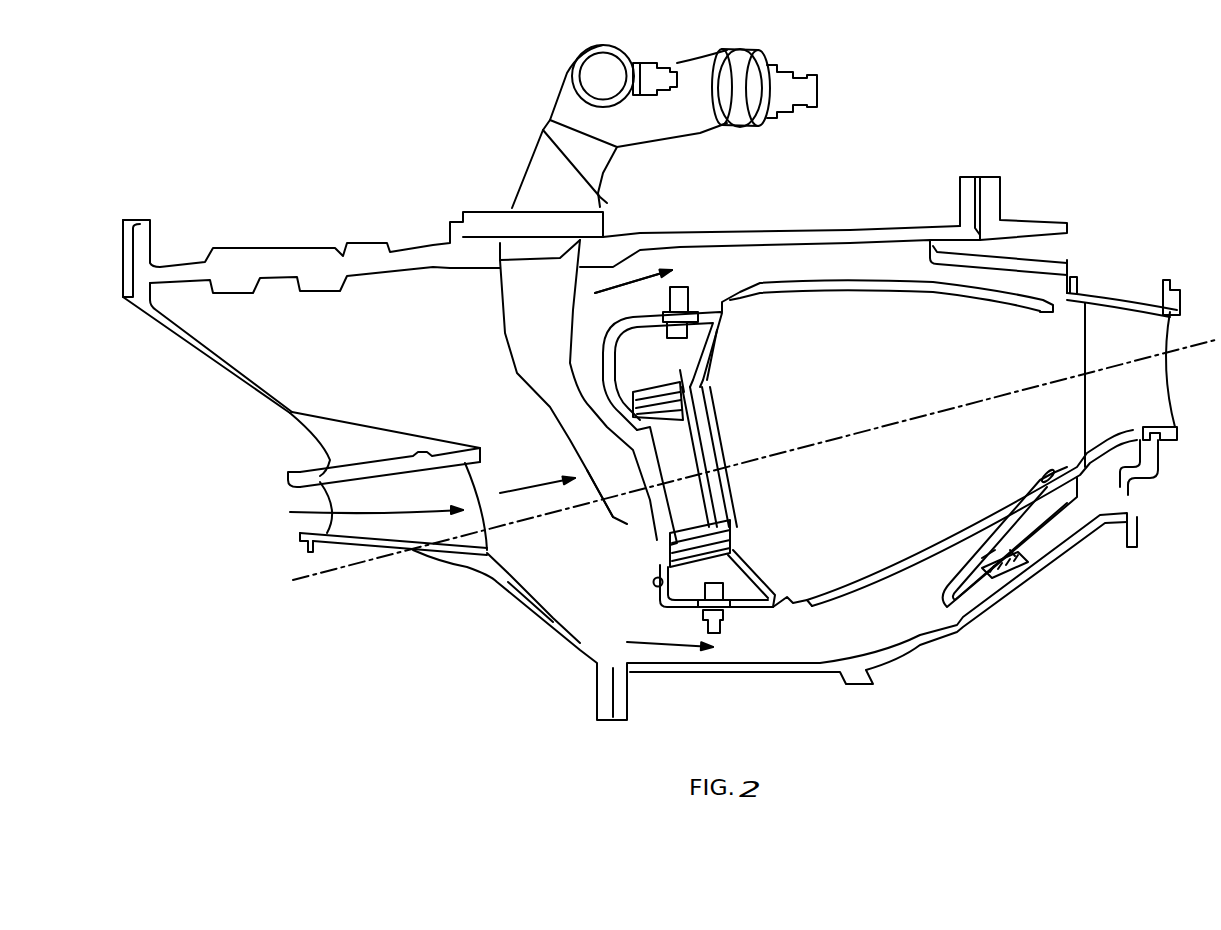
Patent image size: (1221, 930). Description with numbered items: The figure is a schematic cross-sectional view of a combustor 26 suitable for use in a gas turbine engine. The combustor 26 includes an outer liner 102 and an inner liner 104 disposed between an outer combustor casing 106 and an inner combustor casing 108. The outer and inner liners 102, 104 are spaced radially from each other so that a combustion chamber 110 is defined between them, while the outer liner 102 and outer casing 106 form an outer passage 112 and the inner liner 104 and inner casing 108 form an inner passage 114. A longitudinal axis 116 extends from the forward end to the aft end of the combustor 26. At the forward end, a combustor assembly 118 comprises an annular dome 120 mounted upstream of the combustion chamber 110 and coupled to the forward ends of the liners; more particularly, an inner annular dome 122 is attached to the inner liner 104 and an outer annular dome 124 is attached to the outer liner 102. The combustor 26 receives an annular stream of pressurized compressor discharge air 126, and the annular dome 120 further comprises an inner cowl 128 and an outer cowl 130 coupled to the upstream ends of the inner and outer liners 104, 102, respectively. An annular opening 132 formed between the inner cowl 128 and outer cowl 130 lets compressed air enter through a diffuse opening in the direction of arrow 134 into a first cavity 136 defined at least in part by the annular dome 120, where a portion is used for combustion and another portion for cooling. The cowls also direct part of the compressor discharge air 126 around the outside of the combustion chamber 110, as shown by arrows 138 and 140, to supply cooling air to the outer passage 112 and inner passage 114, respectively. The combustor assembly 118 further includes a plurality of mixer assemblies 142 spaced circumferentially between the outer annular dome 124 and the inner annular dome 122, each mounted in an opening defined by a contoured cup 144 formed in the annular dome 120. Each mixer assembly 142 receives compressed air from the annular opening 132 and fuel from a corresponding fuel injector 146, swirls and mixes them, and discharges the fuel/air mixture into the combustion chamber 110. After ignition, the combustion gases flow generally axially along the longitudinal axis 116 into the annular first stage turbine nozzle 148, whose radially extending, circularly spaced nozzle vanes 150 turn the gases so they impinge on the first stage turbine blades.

The combustor 26 is at (357, 158).
The outer liner 102 is at (975, 290).
The inner liner 104 is at (1008, 525).
The outer combustor casing 106 is at (950, 228).
The inner combustor casing 108 is at (987, 590).
The combustion chamber 110 is at (904, 380).
The outer passage 112 is at (806, 272).
The inner passage 114 is at (894, 603).
The longitudinal axis 116 is at (400, 555).
The combustor assembly 118 is at (712, 393).
The annular dome 120 is at (727, 360).
The inner annular dome 122 is at (788, 595).
The outer annular dome 124 is at (722, 322).
The compressor discharge air 126 is at (305, 512).
The inner cowl 128 is at (653, 583).
The outer cowl 130 is at (605, 388).
The annular opening 132 is at (612, 528).
The arrow 134 is at (545, 482).
The first cavity 136 is at (632, 361).
The arrow 138 is at (628, 283).
The arrow 140 is at (663, 643).
The mixer assembly 142 is at (700, 403).
The contoured cup 144 is at (780, 560).
The fuel injector 146 is at (517, 371).
The first stage turbine nozzle 148 is at (1107, 293).
The nozzle vane 150 is at (1107, 351).